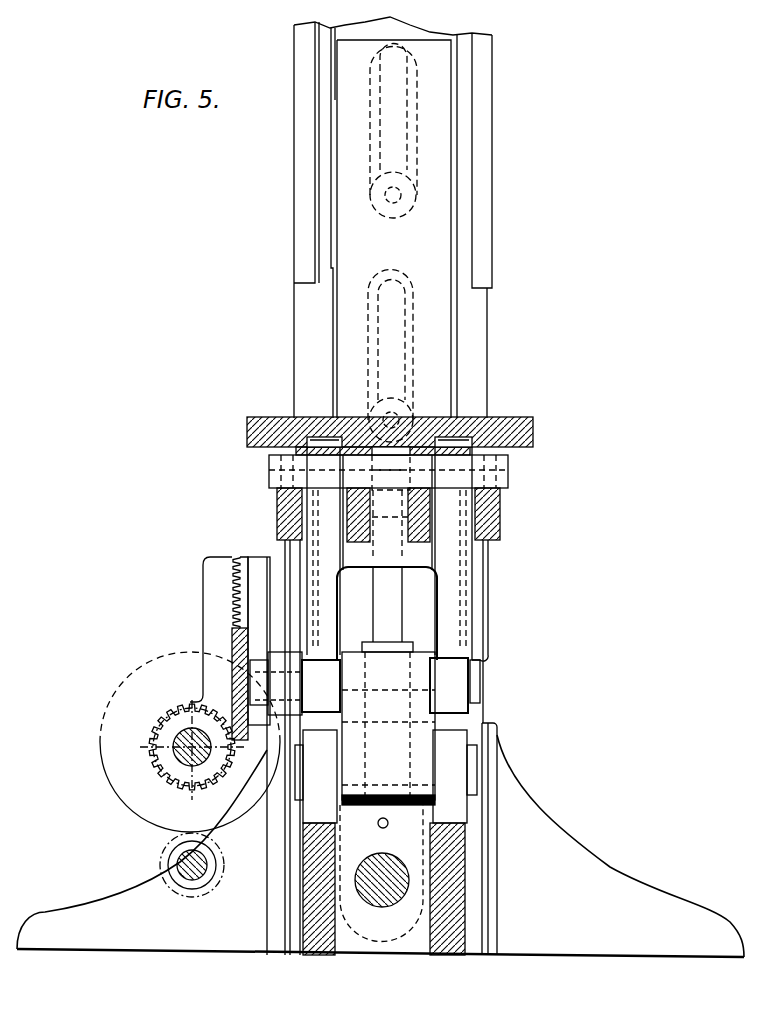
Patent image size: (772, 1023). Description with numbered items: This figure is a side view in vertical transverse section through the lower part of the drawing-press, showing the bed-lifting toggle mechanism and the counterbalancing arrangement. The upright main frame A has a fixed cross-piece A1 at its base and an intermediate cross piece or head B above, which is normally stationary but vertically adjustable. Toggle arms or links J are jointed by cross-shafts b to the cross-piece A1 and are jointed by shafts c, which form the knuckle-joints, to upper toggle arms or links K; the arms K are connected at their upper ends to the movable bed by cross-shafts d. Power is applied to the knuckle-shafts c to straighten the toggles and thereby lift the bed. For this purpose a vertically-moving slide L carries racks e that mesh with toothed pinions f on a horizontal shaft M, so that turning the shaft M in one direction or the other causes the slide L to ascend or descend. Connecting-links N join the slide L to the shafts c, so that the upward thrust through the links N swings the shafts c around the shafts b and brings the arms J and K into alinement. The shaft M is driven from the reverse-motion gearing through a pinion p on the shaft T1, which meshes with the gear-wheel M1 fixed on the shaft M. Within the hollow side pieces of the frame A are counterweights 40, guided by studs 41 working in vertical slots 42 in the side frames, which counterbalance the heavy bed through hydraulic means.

The main frame A is at (490, 225).
The cross-piece A1 is at (455, 815).
The cross piece or head B is at (533, 445).
The cross-shafts d is at (508, 478).
The toggle arms or links K is at (328, 608).
The toggle arms or links J is at (392, 706).
The connecting-links N is at (286, 690).
The shafts or knuckle-joints c is at (470, 688).
The cross-shafts b is at (478, 757).
The racks e is at (232, 585).
The slide L is at (232, 637).
The shaft M is at (160, 760).
The gear-wheel M1 is at (102, 738).
The toothed pinions f is at (153, 724).
The shaft T1 is at (185, 870).
The pinion p is at (214, 893).
The counterweights 40 is at (405, 349).
The studs 41 is at (397, 197).
The vertical slots 42 is at (398, 122).